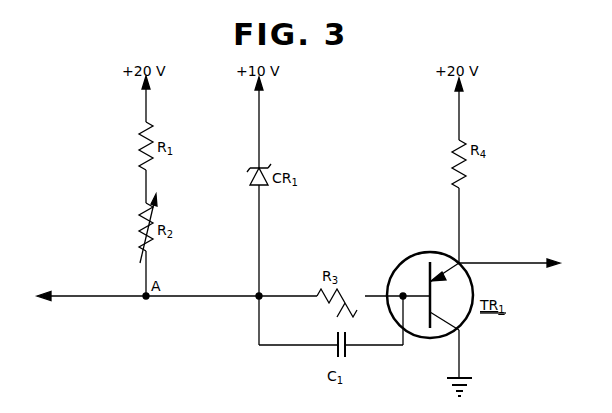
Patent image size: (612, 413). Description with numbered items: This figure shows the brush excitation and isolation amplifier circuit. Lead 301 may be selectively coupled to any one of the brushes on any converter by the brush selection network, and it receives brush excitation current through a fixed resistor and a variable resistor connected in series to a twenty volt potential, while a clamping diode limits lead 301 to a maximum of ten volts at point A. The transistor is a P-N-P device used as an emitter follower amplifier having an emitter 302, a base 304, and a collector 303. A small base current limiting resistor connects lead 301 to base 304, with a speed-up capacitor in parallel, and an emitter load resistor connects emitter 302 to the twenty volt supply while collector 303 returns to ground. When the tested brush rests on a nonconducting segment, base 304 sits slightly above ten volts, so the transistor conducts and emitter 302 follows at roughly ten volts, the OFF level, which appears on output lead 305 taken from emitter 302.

The lead 301 is at (92, 297).
The emitter 302 is at (453, 266).
The collector 303 is at (450, 320).
The base 304 is at (415, 293).
The output lead 305 is at (527, 264).